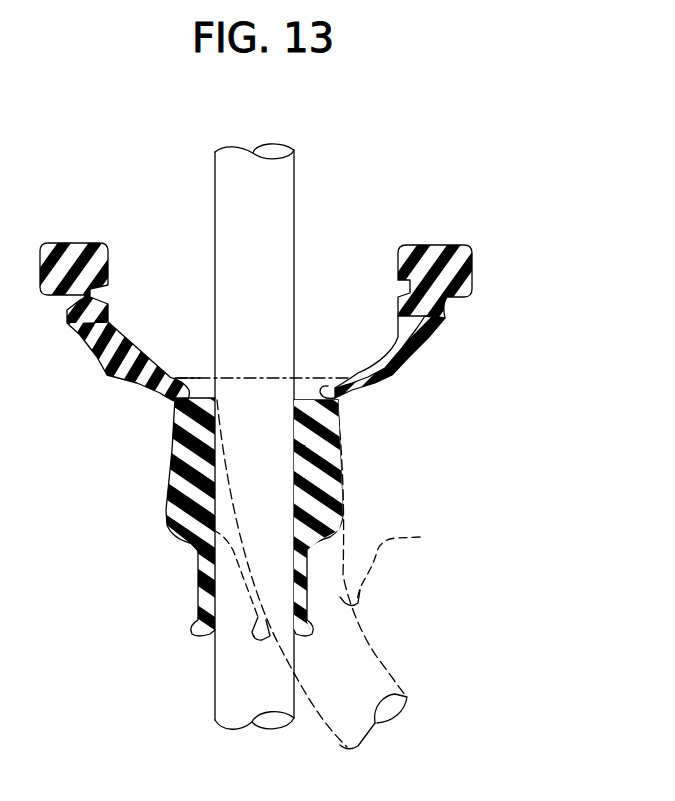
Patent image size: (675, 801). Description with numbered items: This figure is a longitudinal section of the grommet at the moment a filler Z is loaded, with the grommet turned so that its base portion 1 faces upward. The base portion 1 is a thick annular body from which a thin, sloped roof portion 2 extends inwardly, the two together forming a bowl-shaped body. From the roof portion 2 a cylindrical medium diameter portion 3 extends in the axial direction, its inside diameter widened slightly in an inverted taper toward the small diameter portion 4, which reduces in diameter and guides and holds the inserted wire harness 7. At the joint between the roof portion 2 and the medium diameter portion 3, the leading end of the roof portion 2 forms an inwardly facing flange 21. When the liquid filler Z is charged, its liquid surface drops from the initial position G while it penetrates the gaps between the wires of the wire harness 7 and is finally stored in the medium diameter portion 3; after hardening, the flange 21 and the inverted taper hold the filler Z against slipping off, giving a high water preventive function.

The base portion 1 is at (472, 267).
The roof portion 2 is at (110, 377).
The medium diameter portion 3 is at (175, 446).
The small diameter portion 4 is at (200, 581).
The wire harness 7 is at (295, 170).
The inwardly facing flange 21 is at (324, 390).
The initial position of the liquid surface of the filler G is at (189, 378).
The filler Z is at (305, 446).